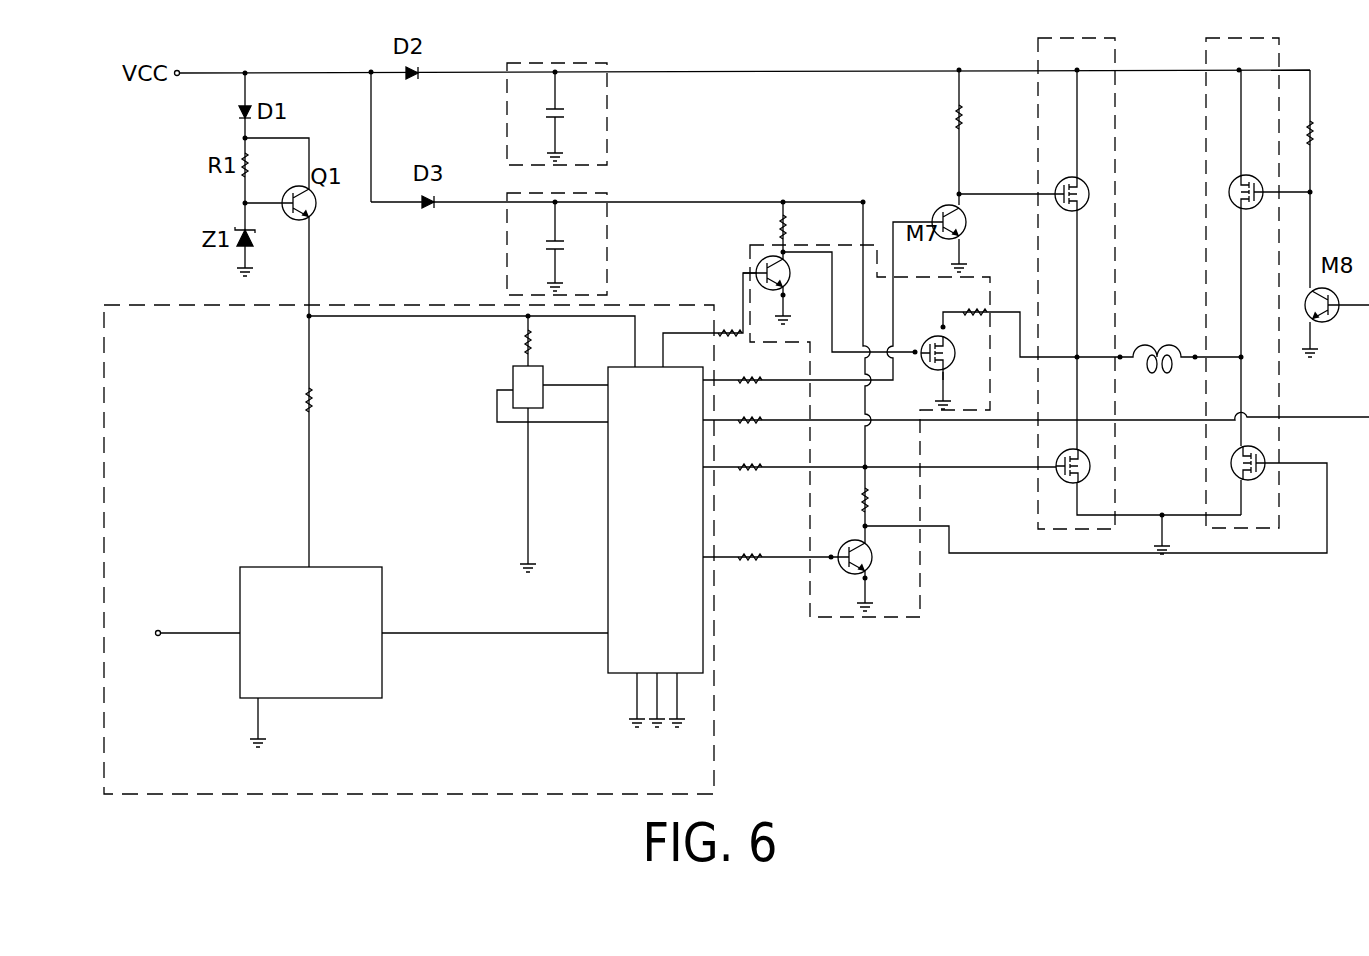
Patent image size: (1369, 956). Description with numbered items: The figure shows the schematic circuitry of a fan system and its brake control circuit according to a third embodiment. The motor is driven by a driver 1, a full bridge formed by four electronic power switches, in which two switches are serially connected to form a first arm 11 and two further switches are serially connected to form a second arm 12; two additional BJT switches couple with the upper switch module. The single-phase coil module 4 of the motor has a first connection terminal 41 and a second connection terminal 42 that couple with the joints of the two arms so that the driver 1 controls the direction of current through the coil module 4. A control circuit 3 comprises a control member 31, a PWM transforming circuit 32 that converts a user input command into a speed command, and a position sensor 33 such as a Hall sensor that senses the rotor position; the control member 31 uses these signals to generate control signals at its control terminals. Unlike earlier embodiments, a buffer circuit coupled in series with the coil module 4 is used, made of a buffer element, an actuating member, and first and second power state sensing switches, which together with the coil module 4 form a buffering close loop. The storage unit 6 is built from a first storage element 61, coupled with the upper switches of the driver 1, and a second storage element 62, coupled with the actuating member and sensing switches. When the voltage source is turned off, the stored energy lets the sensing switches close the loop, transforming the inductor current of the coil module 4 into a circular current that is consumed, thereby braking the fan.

The driver 1 is at (1173, 390).
The first arm 11 is at (1077, 529).
The second arm 12 is at (1222, 530).
The control circuit 3 is at (446, 576).
The control member 31 is at (690, 673).
The PWM transforming circuit 32 is at (285, 566).
The position sensor 33 is at (537, 366).
The coil module 4 is at (1159, 288).
The first connection terminal 41 is at (1120, 350).
The second connection terminal 42 is at (1197, 350).
The storage unit 6 is at (636, 179).
The first storage element 61 is at (607, 92).
The second storage element 62 is at (607, 237).